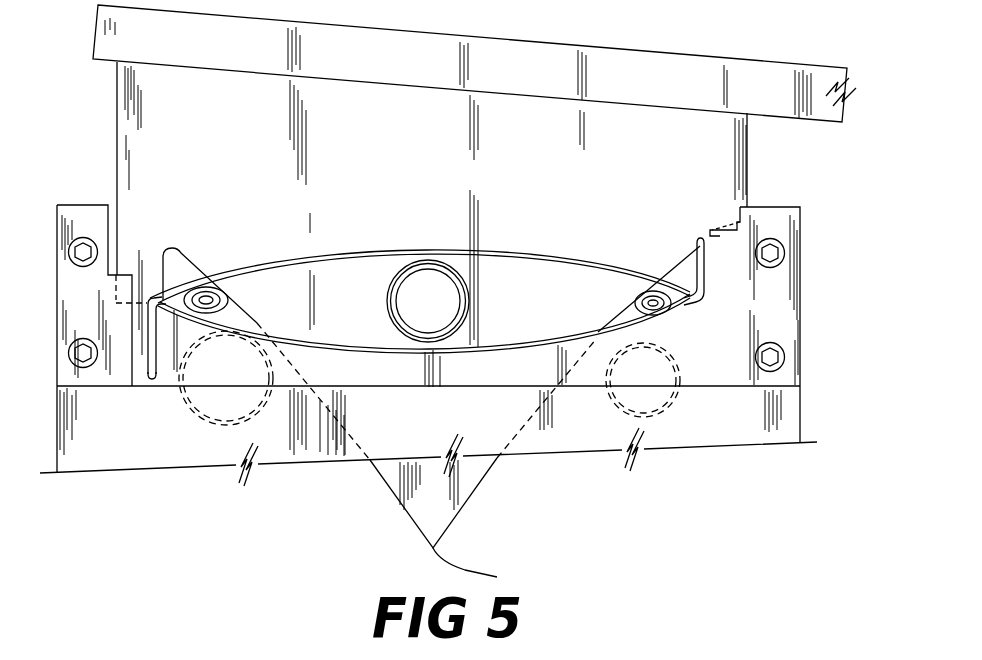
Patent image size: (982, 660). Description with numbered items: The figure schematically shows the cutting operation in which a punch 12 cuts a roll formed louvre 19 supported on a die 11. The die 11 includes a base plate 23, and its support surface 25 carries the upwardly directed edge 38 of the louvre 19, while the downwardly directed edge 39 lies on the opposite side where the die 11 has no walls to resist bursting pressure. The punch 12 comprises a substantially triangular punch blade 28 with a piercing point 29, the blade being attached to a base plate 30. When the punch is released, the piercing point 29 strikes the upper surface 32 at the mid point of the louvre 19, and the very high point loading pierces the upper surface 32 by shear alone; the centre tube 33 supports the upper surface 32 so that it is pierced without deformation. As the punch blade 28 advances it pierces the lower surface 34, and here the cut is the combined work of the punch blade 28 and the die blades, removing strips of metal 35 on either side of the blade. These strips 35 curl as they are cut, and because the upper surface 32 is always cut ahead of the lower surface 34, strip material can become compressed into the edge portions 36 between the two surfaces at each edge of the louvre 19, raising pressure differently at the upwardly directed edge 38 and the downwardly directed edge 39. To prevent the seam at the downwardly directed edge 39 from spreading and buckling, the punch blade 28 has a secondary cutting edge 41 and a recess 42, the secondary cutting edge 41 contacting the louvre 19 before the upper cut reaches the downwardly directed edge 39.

The die 11 is at (817, 302).
The punch 12 is at (770, 172).
The louvre 19 is at (420, 308).
The base plate 23 is at (723, 420).
The surface 25 is at (710, 280).
The punch blade 28 is at (473, 492).
The piercing point 29 is at (478, 570).
The base plate 30 is at (442, 73).
The upper surface 32 is at (293, 262).
The centre tube 33 is at (470, 298).
The lower surface 34 is at (368, 350).
The strips of metal 35 is at (207, 420).
The edge portions 36 is at (210, 295).
The upwardly directed edge 38 is at (702, 240).
The downwardly directed edge 39 is at (141, 376).
The secondary cutting edge 41 is at (153, 298).
The recess 42 is at (184, 256).